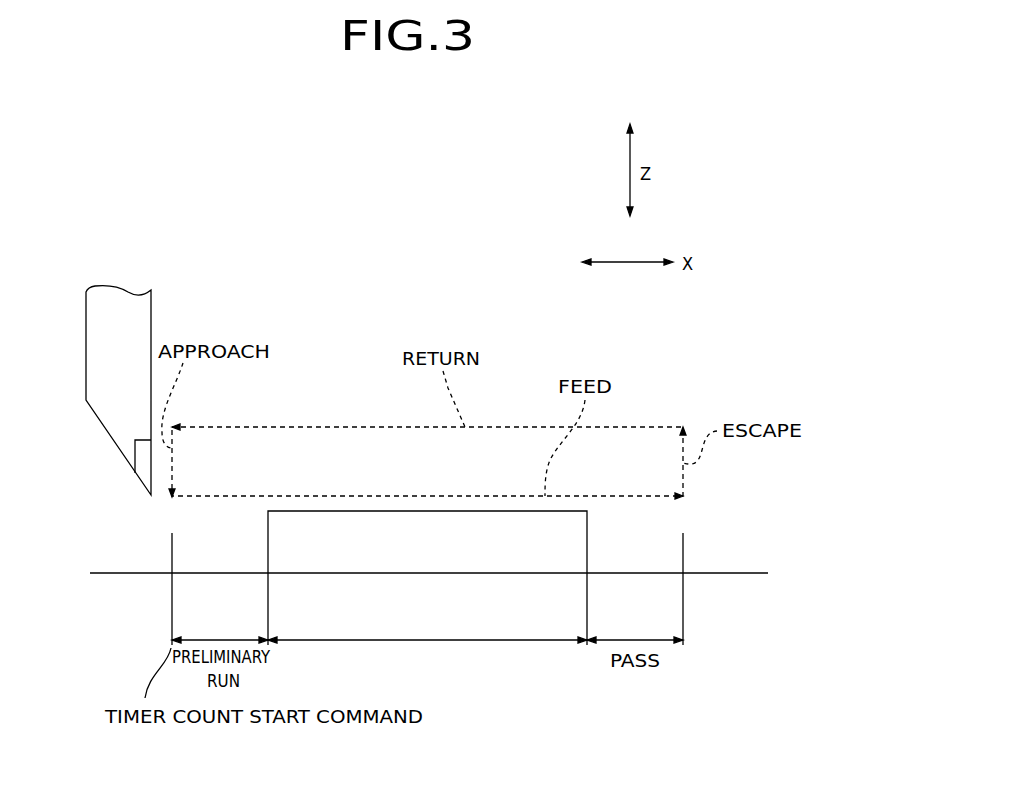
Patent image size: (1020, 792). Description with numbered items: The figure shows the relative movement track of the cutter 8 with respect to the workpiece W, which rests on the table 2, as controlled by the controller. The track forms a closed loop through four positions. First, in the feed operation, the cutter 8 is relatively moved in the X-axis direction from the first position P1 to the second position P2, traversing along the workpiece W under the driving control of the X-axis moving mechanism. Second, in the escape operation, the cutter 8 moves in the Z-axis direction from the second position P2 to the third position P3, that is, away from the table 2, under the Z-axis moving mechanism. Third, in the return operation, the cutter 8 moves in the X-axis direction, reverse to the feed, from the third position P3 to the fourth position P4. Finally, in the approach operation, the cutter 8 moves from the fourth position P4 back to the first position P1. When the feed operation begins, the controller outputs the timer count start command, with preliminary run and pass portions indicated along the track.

The cutter 8 is at (118, 293).
The table 2 is at (725, 604).
The workpiece W is at (421, 560).
The first position P1 is at (172, 498).
The second position P2 is at (686, 497).
The third position P3 is at (683, 422).
The fourth position P4 is at (177, 427).